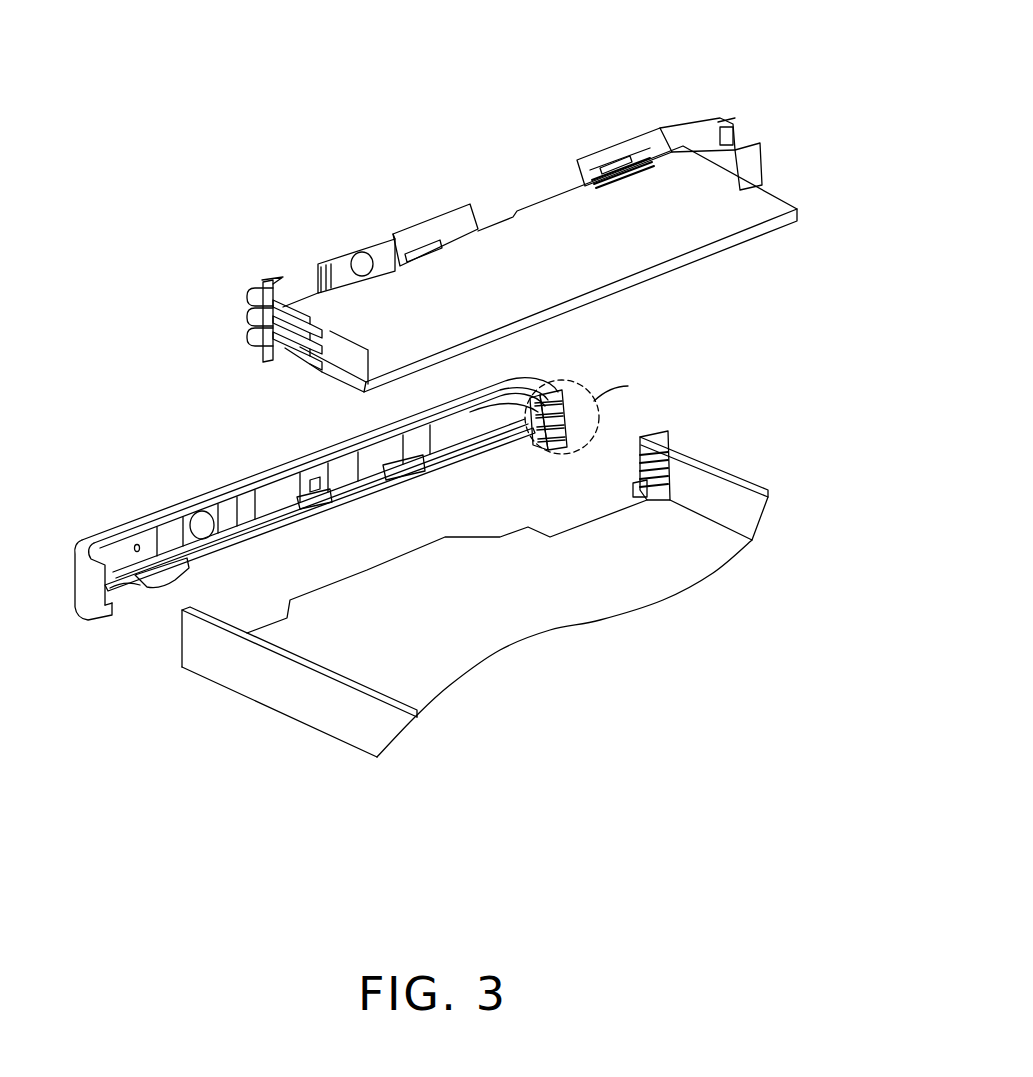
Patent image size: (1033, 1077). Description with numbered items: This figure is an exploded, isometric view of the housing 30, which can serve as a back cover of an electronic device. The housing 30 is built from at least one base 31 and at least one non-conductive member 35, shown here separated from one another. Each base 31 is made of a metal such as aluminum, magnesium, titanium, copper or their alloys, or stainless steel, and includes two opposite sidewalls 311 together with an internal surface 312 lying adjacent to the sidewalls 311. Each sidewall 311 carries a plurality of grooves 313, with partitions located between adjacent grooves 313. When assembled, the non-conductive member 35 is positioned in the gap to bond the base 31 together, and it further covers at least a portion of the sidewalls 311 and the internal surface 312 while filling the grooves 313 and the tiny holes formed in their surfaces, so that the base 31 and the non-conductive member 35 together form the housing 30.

The housing 30 is at (540, 73).
The non-conductive member 35 is at (715, 230).
The base 31 is at (92, 597).
The sidewall 311 is at (708, 482).
The internal surface 312 is at (625, 600).
The groove 313 is at (565, 423).